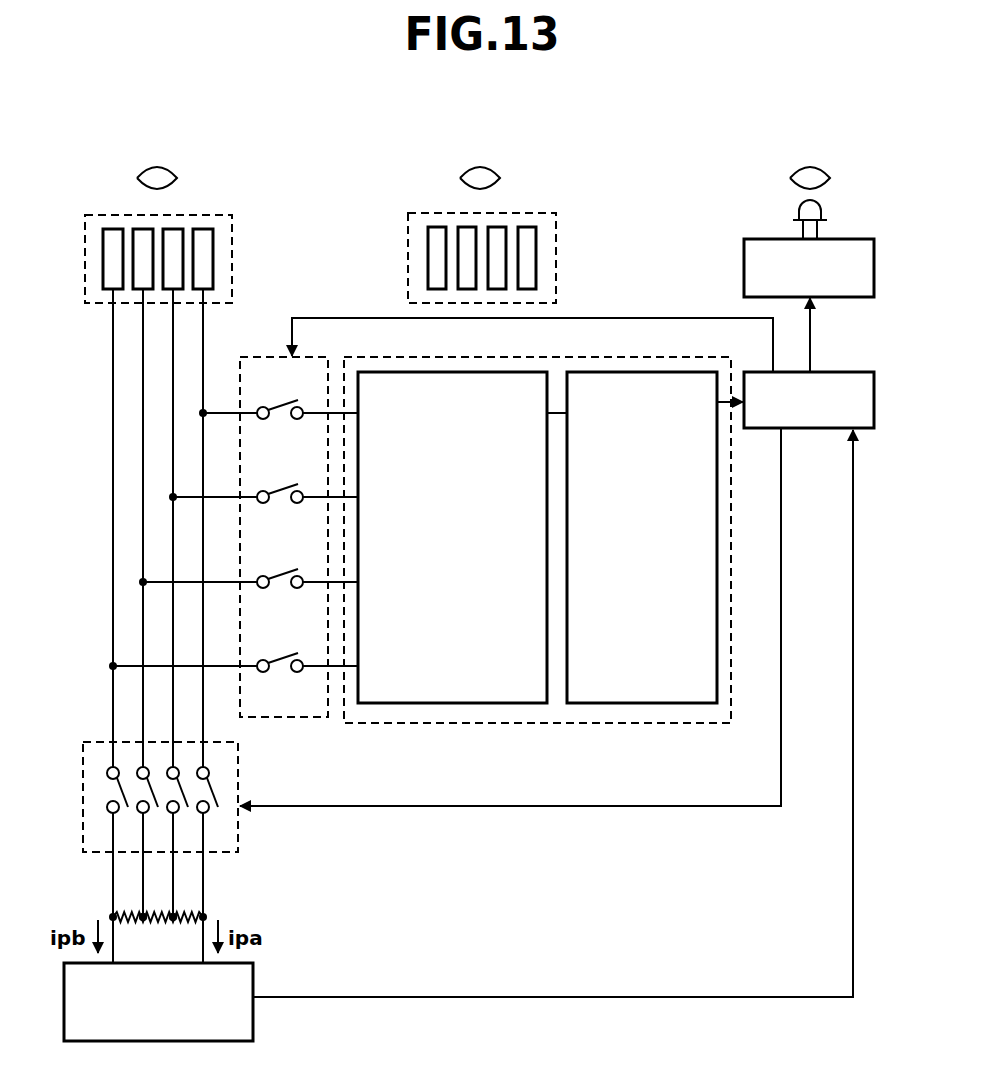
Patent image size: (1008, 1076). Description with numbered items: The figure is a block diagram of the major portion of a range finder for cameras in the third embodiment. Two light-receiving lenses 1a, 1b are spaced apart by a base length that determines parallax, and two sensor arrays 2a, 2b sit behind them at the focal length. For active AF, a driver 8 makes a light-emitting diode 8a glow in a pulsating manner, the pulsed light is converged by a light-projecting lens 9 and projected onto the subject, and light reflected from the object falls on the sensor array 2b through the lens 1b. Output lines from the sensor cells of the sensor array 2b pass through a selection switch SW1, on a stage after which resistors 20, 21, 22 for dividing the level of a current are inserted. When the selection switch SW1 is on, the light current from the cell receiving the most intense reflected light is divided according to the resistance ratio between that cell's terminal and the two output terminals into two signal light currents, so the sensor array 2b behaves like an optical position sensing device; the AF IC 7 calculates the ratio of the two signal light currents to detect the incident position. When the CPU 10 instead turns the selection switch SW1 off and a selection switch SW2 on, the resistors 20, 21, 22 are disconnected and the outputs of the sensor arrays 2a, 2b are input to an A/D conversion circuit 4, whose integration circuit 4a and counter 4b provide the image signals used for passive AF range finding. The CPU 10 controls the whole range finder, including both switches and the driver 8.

The light-receiving lens 1a is at (498, 172).
The light-receiving lens 1b is at (175, 172).
The sensor array 2a is at (522, 212).
The sensor array 2b is at (195, 213).
The A/D conversion circuit 4 is at (543, 526).
The integration circuit 4a is at (498, 372).
The counter 4b is at (668, 372).
The AF IC 7 is at (255, 978).
The driver 8 is at (876, 268).
The light-emitting diode 8a is at (823, 214).
The light-projecting lens 9 is at (828, 172).
The CPU 10 is at (852, 370).
The resistor 20 is at (127, 908).
The resistor 21 is at (160, 907).
The resistor 22 is at (192, 903).
The selection switch SW1 is at (240, 760).
The selection switch SW2 is at (264, 718).